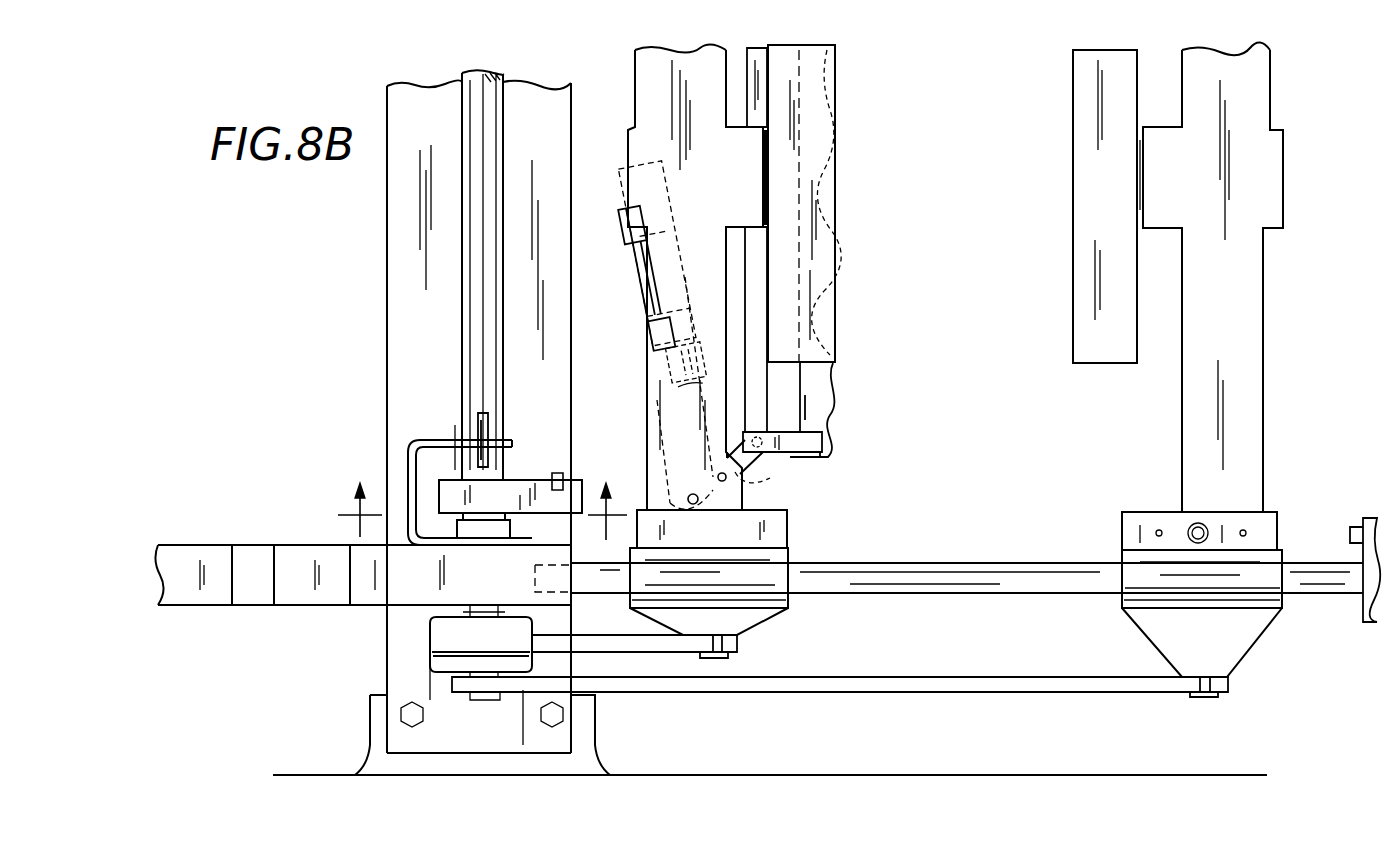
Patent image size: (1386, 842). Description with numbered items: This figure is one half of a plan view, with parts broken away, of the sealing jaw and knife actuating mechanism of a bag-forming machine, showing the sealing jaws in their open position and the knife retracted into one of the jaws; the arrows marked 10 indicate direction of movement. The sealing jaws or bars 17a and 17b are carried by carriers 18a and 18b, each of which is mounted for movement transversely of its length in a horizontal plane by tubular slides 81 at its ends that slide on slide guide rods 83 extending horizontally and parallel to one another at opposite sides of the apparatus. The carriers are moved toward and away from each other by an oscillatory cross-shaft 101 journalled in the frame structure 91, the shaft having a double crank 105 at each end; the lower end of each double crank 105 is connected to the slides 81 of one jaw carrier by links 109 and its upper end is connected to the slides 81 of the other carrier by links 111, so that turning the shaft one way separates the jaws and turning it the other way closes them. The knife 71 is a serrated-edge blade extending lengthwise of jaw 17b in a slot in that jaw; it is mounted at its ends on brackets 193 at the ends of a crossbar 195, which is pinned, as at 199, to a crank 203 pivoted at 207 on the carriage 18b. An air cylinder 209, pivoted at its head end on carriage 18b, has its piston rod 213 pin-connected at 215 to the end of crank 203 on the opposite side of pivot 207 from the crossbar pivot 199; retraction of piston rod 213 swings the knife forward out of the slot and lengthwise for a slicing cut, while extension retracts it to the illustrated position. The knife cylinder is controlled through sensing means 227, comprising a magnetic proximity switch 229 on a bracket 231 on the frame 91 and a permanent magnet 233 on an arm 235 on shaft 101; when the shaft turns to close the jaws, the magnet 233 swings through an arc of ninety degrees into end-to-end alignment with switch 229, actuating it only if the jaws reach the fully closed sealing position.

The direction of movement arrow 10 is at (483, 512).
The sealing jaw 17a is at (1073, 162).
The sealing jaw 17b is at (838, 185).
The carrier 18a is at (1243, 297).
The carrier 18b is at (636, 82).
The knife 71 is at (818, 378).
The tubular slide 81 is at (788, 612).
The slide guide rod 83 is at (965, 590).
The frame structure 91 is at (182, 607).
The cross-shaft 101 is at (470, 237).
The double crank 105 is at (437, 633).
The link 109 is at (665, 645).
The link 111 is at (928, 680).
The bracket 193 is at (785, 466).
The crossbar 195 is at (747, 50).
The pin connection 199 is at (768, 476).
The crank 203 is at (737, 449).
The pivot 207 is at (727, 482).
The air cylinder 209 is at (636, 273).
The piston rod 213 is at (660, 368).
The pin connection 215 is at (688, 497).
The sensing means 227 is at (456, 426).
The magnetic switch 229 is at (490, 430).
The bracket 231 is at (408, 452).
The permanent magnet 233 is at (556, 473).
The arm 235 is at (535, 505).